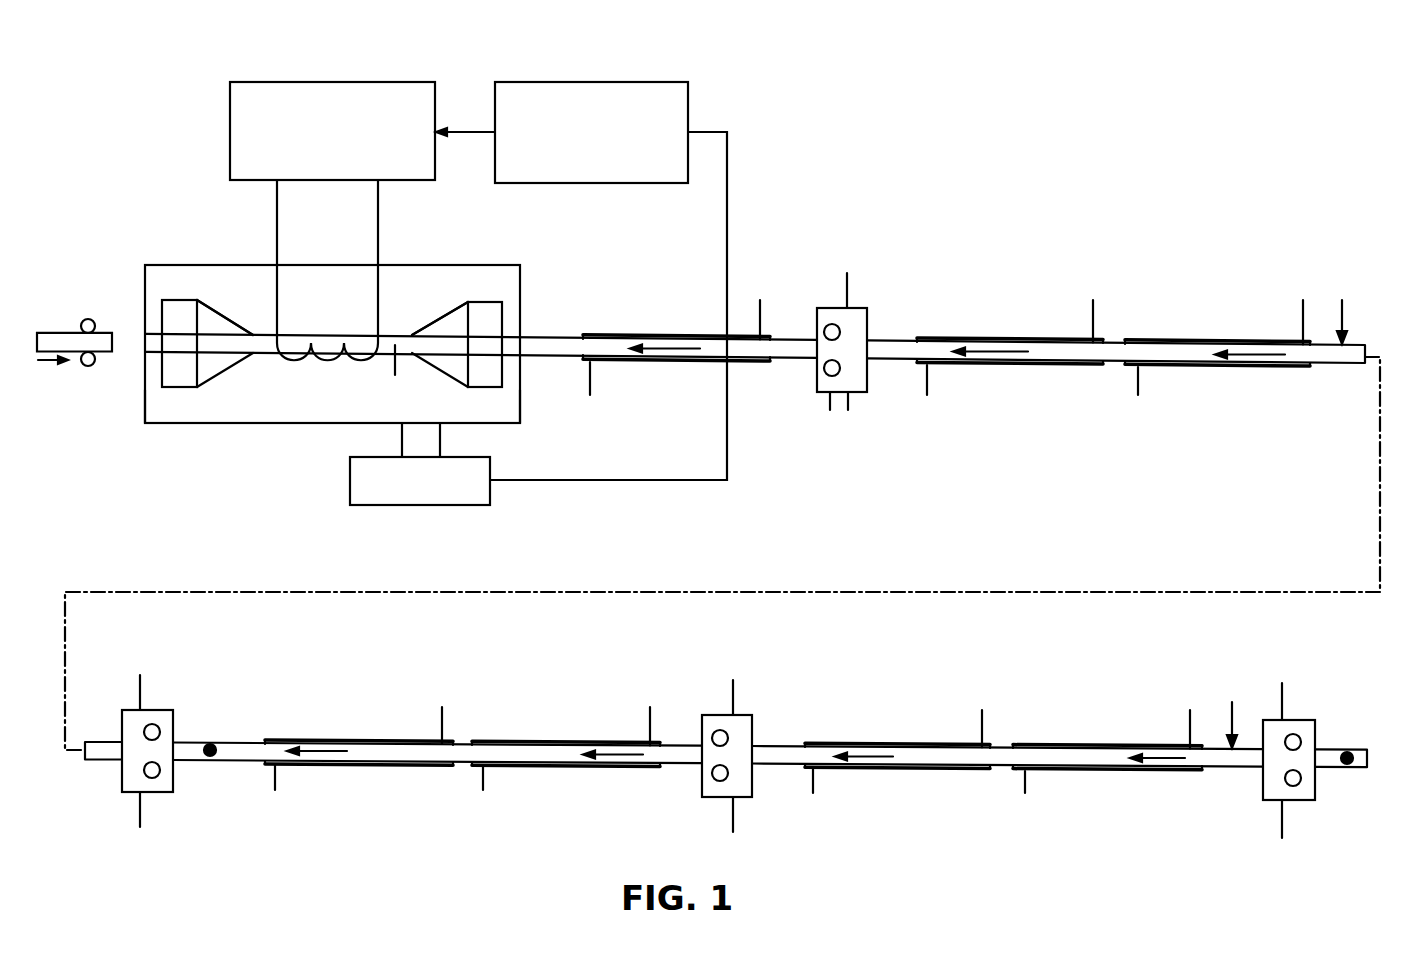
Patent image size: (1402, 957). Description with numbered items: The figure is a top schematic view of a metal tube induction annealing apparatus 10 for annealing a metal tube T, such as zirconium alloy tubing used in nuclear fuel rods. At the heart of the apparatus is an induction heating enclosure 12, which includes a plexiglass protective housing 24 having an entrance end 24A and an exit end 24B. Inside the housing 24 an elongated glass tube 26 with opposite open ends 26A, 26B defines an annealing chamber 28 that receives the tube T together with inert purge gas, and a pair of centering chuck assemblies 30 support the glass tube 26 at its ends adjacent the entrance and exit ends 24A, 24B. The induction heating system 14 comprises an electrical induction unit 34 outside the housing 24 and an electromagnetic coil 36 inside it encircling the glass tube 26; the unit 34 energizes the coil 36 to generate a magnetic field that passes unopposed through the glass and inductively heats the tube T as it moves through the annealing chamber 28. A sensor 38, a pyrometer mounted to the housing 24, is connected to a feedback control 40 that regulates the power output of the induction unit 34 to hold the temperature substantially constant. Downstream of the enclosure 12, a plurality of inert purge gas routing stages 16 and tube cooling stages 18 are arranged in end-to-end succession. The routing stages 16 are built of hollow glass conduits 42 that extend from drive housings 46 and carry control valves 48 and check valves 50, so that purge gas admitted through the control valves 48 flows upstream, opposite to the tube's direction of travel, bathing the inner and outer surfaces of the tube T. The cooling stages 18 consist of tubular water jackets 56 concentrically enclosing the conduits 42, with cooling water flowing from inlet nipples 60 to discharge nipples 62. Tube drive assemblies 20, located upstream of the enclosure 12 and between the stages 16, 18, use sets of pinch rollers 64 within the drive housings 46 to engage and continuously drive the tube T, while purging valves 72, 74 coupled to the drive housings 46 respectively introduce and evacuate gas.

The induction annealing apparatus 10 is at (870, 204).
The induction heating enclosure 12 is at (527, 273).
The induction heating system 14 is at (210, 164).
The inert purge gas routing stages 16 is at (744, 364).
The tube cooling stages 18 is at (667, 372).
The tube drive assemblies 20 is at (117, 378).
The protective housing 24 is at (456, 265).
The entrance end 24A is at (147, 398).
The exit end 24B is at (522, 393).
The glass tube 26 is at (398, 334).
The open end 26A is at (184, 333).
The open end 26B is at (505, 325).
The annealing chamber 28 is at (348, 376).
The centering chuck assemblies 30 is at (178, 388).
The induction unit 34 is at (262, 82).
The electromagnetic coil 36 is at (314, 366).
The sensor 38 is at (416, 506).
The feedback control 40 is at (655, 82).
The glass conduits 42 is at (788, 339).
The drive housings 46 is at (793, 374).
The control valves 48 is at (1343, 318).
The check valves 50 is at (212, 744).
The water jackets 56 is at (727, 364).
The inlet nipples 60 is at (758, 300).
The discharge nipples 62 is at (590, 395).
The pinch rollers 64 is at (98, 335).
The purging valve 72 is at (848, 290).
The purging valve 74 is at (850, 400).
The metal tube T is at (58, 333).